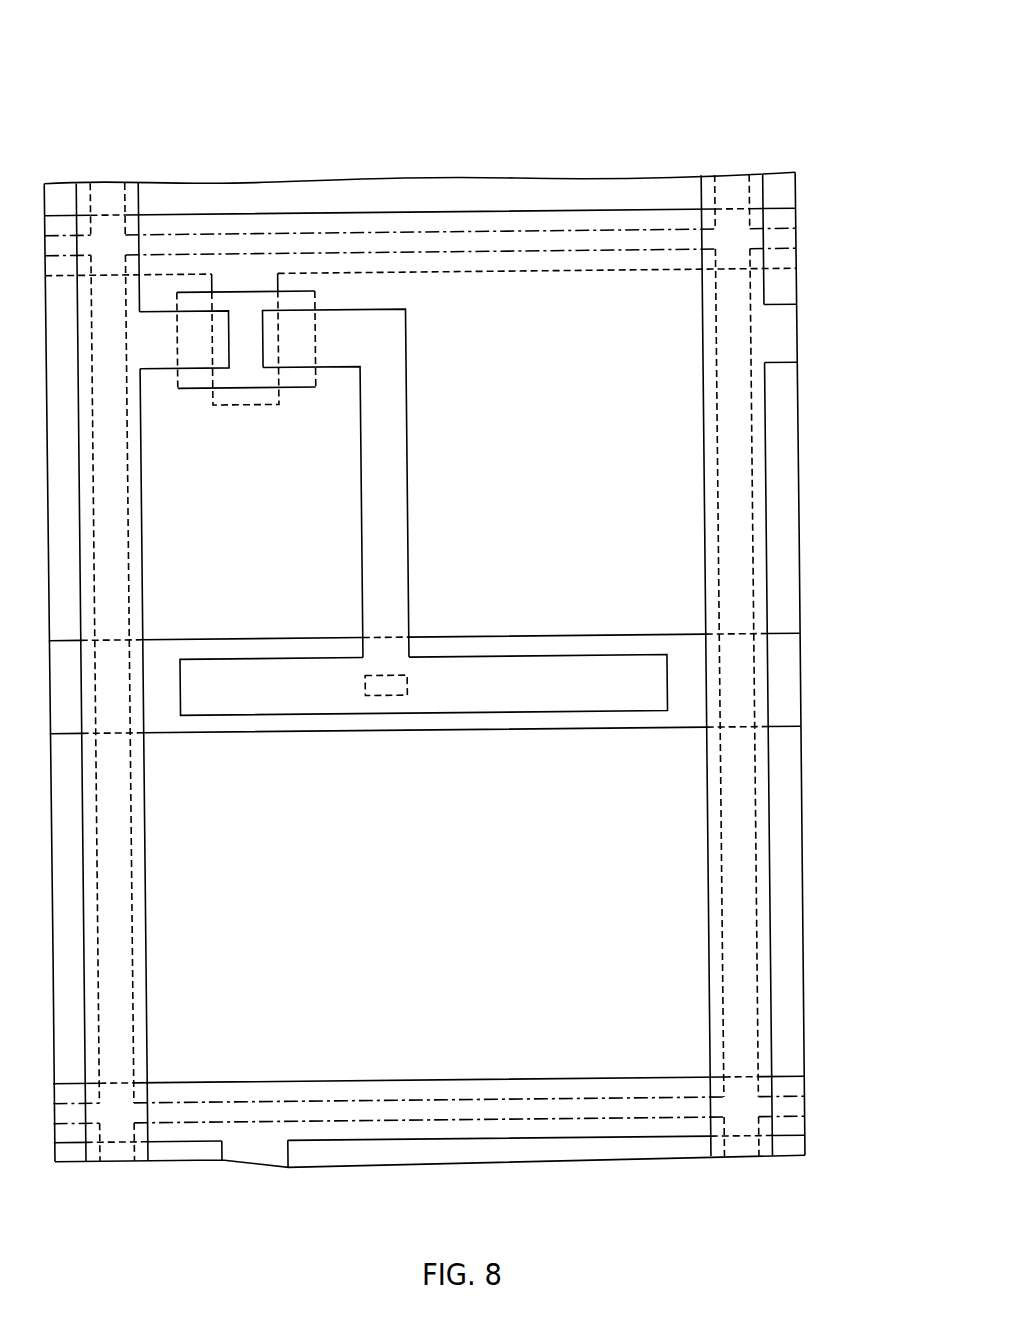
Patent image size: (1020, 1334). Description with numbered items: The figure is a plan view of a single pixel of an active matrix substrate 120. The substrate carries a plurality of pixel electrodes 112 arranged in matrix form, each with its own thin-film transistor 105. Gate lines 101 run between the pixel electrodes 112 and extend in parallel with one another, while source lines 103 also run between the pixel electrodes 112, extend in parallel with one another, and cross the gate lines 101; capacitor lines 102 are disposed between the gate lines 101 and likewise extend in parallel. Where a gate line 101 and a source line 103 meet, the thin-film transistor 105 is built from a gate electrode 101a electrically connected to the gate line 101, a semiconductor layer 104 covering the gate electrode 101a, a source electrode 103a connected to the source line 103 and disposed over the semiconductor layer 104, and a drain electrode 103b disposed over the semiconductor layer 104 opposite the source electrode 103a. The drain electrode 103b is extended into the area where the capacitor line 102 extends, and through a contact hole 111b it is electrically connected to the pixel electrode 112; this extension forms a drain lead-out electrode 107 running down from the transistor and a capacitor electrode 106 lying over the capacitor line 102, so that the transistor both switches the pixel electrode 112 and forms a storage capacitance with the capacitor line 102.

The active matrix substrate 120 is at (744, 108).
The source line 103 is at (117, 187).
The source electrode 103a is at (160, 350).
The drain electrode 103b is at (301, 357).
The semiconductor layer 104 is at (196, 378).
The gate line 101 is at (787, 242).
The gate electrode 101a is at (256, 410).
The thin-film transistor 105 is at (359, 477).
The drain lead-out electrode 107 is at (399, 502).
The capacitor electrode 106 is at (548, 704).
The contact hole 111b is at (393, 697).
The capacitor line 102 is at (787, 687).
The pixel electrode 112 is at (720, 461).